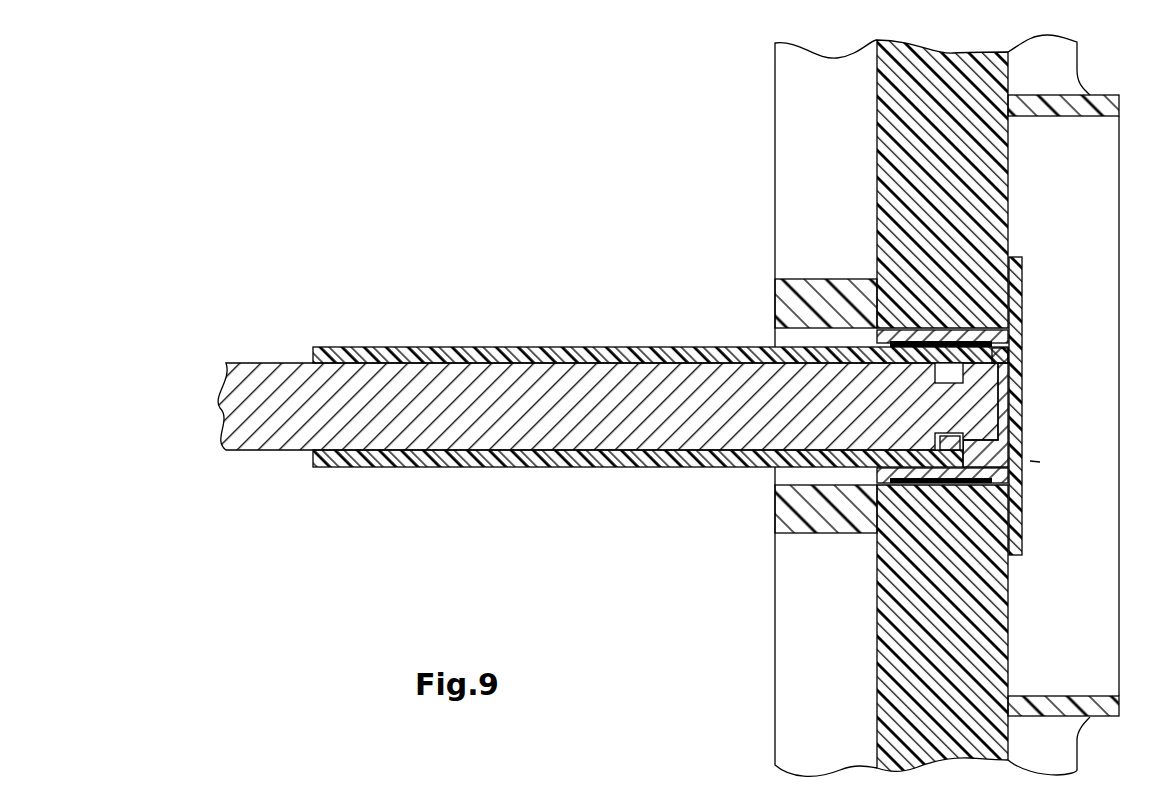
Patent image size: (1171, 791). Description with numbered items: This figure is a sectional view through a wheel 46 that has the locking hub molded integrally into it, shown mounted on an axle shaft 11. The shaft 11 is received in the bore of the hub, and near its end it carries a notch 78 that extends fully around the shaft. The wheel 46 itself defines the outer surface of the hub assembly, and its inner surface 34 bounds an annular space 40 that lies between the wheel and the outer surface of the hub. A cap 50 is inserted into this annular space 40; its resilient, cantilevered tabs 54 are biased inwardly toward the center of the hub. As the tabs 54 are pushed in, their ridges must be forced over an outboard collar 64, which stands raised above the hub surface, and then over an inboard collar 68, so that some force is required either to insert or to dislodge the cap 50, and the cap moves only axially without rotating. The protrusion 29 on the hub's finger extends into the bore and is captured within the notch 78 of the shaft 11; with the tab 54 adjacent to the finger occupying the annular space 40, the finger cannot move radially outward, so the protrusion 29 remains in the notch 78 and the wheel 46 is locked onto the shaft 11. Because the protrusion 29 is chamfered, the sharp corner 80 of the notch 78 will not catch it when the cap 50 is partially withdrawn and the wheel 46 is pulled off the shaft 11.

The axle shaft 11 is at (274, 372).
The wheel 46 is at (893, 112).
The annular space 40 is at (805, 340).
The inner surface 34 is at (812, 481).
The inboard collar 68 is at (897, 335).
The tabs 54 is at (982, 480).
The notch 78 is at (953, 377).
The outboard collar 64 is at (1023, 330).
The sharp corner 80 is at (1002, 366).
The protrusion 29 is at (955, 440).
The cap 50 is at (1030, 461).